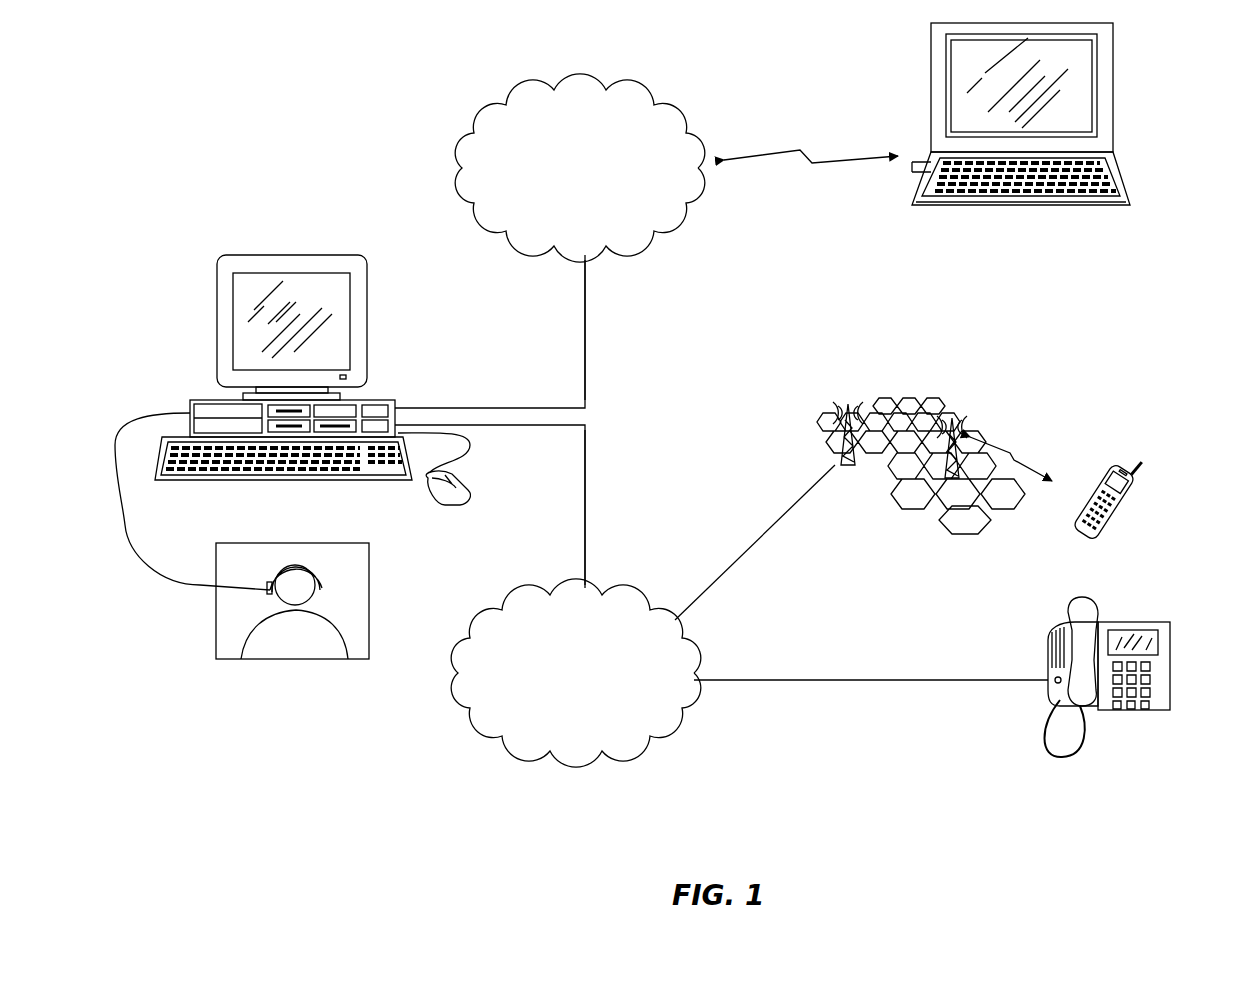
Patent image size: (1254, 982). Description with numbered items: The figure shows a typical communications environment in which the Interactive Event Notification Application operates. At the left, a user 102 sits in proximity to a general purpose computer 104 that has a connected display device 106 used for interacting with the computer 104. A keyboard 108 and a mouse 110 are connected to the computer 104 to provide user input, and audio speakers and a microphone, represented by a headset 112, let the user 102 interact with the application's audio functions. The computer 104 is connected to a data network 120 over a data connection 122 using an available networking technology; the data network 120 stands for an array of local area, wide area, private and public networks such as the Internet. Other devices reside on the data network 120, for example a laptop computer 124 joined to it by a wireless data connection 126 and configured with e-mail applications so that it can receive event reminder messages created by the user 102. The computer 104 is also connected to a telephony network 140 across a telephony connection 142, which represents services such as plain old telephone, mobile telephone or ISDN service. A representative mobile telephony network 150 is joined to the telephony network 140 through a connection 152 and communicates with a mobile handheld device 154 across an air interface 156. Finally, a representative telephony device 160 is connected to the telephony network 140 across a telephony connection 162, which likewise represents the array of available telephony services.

The user 102 is at (341, 612).
The general purpose computer 104 is at (372, 397).
The display device 106 is at (337, 323).
The keyboard 108 is at (318, 480).
The mouse 110 is at (470, 488).
The headset 112 is at (331, 577).
The data network 120 is at (562, 211).
The data connection 122 is at (589, 315).
The laptop computer 124 is at (1113, 60).
The wireless data connection 126 is at (840, 153).
The telephony network 140 is at (558, 716).
The telephony connection 142 is at (590, 540).
The mobile telephony network 150 is at (980, 414).
The connection 152 is at (788, 523).
The mobile handheld device 154 is at (1108, 523).
The air interface 156 is at (1010, 451).
The telephony device 160 is at (1170, 652).
The telephony connection 162 is at (878, 683).